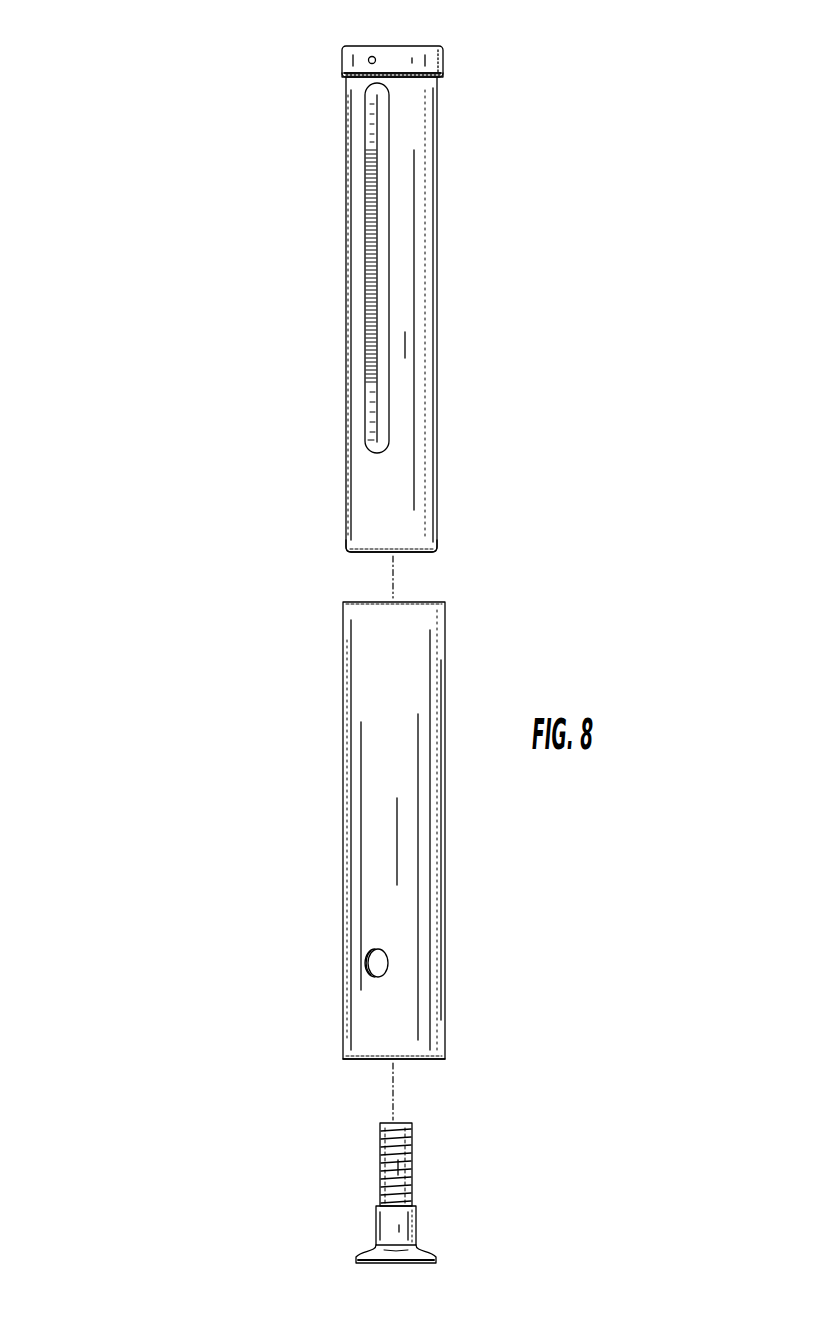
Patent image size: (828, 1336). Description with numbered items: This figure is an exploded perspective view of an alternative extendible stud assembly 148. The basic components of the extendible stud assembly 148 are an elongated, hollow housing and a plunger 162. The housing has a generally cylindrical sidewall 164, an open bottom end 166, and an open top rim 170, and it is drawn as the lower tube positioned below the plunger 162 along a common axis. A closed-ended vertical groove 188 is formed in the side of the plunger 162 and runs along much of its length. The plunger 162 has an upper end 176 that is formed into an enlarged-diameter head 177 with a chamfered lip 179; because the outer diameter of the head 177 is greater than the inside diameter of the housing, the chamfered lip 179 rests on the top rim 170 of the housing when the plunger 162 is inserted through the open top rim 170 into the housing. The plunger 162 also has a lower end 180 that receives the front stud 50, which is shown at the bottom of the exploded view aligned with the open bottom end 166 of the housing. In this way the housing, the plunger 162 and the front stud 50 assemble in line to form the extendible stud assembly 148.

The extendible stud assembly 148 is at (206, 122).
The upper end 176 is at (460, 31).
The enlarged-diameter head 177 is at (441, 67).
The chamfered lip 179 is at (347, 77).
The plunger 162 is at (436, 308).
The closed-ended vertical groove 188 is at (370, 351).
The lower end 180 is at (437, 563).
The open top rim 170 is at (346, 594).
The cylindrical sidewall 164 is at (362, 970).
The open bottom end 166 is at (352, 1066).
The front stud 50 is at (416, 1225).